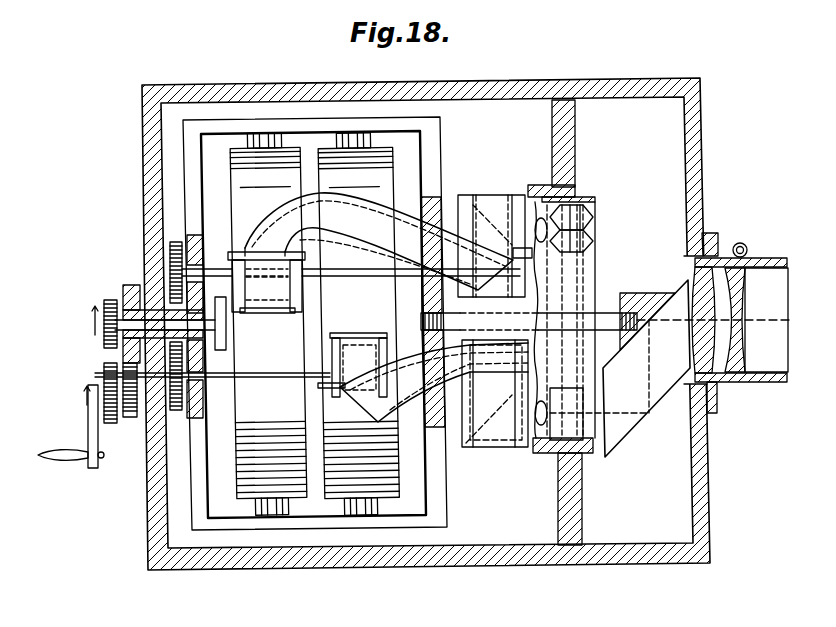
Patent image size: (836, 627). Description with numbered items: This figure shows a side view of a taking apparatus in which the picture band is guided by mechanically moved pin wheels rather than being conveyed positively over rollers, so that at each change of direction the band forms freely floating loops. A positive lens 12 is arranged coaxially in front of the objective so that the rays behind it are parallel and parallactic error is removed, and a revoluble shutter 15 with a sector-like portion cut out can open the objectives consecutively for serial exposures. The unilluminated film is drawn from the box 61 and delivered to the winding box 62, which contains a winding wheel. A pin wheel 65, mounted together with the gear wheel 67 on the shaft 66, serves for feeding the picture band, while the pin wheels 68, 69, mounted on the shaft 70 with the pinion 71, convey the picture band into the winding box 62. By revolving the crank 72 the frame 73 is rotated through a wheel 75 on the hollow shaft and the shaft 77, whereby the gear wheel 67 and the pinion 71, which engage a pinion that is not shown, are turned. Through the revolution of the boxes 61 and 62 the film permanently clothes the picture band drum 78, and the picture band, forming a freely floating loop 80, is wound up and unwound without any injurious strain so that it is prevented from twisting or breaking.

The positive lens 12 is at (697, 272).
The revoluble shutter 15 is at (756, 320).
The box 61 is at (393, 181).
The winding box 62 is at (243, 201).
The pin wheel 65 is at (228, 333).
The shaft 66 is at (220, 388).
The gear wheel 67 is at (203, 401).
The pin wheel 68 is at (292, 293).
The pin wheel 69 is at (492, 255).
The shaft 70 is at (388, 241).
The pinion 71 is at (158, 243).
The crank 72 is at (80, 427).
The frame 73 is at (183, 203).
The wheel 75 is at (134, 417).
The shaft 77 is at (568, 324).
The picture band drum 78 is at (482, 200).
The freely floating loop 80 is at (410, 410).